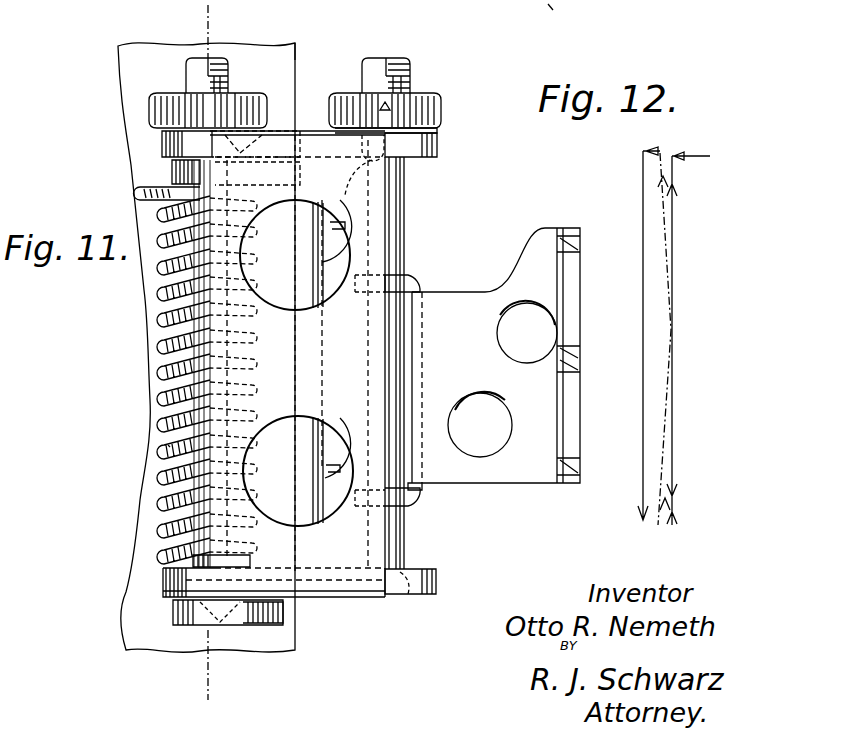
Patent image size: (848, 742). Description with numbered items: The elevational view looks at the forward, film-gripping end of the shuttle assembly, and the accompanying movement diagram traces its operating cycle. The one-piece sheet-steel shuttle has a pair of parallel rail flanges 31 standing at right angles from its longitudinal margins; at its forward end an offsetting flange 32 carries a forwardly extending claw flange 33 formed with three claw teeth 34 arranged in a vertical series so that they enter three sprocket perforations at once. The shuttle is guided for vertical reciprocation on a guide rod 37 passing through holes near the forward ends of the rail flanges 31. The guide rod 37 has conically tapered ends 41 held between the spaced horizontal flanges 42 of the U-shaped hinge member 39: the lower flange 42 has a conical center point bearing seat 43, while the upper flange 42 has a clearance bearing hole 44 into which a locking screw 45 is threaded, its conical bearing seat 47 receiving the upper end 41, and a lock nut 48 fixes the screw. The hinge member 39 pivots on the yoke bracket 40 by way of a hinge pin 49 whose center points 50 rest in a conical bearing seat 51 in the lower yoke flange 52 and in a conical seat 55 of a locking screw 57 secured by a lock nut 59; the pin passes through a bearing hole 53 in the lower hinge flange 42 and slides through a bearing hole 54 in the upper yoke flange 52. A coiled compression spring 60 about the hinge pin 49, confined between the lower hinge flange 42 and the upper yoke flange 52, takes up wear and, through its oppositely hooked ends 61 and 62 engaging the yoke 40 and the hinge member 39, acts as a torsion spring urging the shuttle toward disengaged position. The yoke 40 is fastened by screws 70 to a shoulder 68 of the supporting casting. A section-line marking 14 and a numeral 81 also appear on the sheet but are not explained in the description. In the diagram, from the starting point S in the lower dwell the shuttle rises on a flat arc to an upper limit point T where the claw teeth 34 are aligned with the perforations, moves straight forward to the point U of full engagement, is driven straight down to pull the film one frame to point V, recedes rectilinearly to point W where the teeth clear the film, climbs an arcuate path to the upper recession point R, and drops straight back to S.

In FIG. 11, the section line 14- 14 is at (232, 20).
In FIG. 11, the rail flanges 31 is at (396, 282).
In FIG. 11, the offsetting flange 32 is at (468, 290).
In FIG. 11, the claw flange 33 is at (575, 293).
In FIG. 11, the claw teeth 34 is at (580, 236).
In FIG. 11, the guide rod 37 is at (404, 186).
In FIG. 11, the hinge member 39 is at (304, 142).
In FIG. 11, the yoke bracket 40 is at (294, 271).
In FIG. 11, the conically tapered ends 41 is at (372, 568).
In FIG. 11, the horizontal flanges 42 is at (437, 146).
In FIG. 11, the conical center point bearing seat 43 is at (410, 596).
In FIG. 11, the bearing hole 44 is at (437, 131).
In FIG. 11, the locking screw 45 is at (402, 80).
In FIG. 11, the conical bearing seat 47 is at (360, 163).
In FIG. 11, the lock nut 48 is at (441, 112).
In FIG. 11, the hinge pin 49 is at (168, 356).
In FIG. 11, the center points 50 is at (222, 145).
In FIG. 11, the conical bearing seat 51 is at (178, 619).
In FIG. 11, the yoke flanges 52 is at (172, 174).
In FIG. 11, the bearing hole 53 is at (162, 589).
In FIG. 11, the bearing hole 54 is at (257, 170).
In FIG. 11, the conical seat 55 is at (162, 144).
In FIG. 11, the locking screw 57 is at (188, 72).
In FIG. 11, the lock nut 59 is at (248, 106).
In FIG. 11, the coiled compression spring 60 is at (168, 431).
In FIG. 11, the lateral hook 61 is at (140, 196).
In FIG. 11, the lateral hook 62 is at (250, 563).
In FIG. 11, the shoulder 68 is at (298, 72).
In FIG. 11, the screws 70 is at (332, 222).
In FIG. 12, the element 81 is at (568, 14).
In FIG. 12, the point of total engagement U is at (627, 328).
In FIG. 12, the upper limit point T is at (662, 152).
In FIG. 12, the upper neutral or ultimate recession point R is at (709, 332).
In FIG. 12, the point V is at (644, 524).
In FIG. 12, the point W is at (660, 528).
In FIG. 12, the starting point S is at (676, 529).